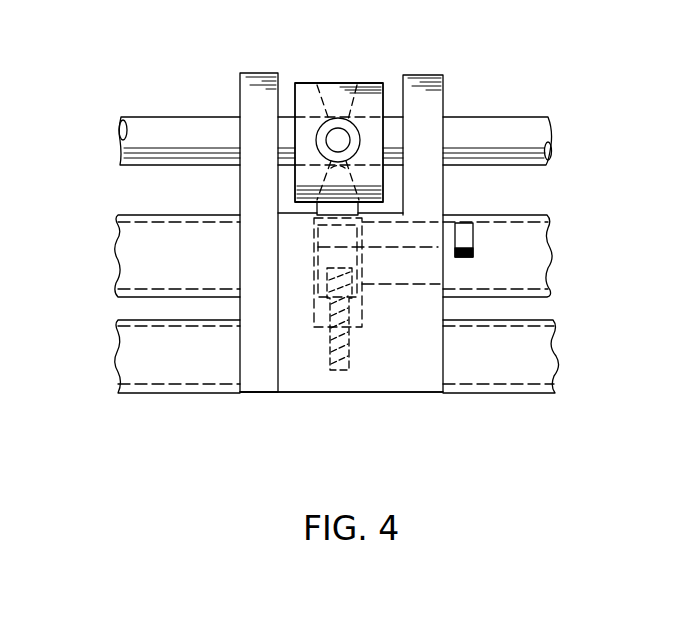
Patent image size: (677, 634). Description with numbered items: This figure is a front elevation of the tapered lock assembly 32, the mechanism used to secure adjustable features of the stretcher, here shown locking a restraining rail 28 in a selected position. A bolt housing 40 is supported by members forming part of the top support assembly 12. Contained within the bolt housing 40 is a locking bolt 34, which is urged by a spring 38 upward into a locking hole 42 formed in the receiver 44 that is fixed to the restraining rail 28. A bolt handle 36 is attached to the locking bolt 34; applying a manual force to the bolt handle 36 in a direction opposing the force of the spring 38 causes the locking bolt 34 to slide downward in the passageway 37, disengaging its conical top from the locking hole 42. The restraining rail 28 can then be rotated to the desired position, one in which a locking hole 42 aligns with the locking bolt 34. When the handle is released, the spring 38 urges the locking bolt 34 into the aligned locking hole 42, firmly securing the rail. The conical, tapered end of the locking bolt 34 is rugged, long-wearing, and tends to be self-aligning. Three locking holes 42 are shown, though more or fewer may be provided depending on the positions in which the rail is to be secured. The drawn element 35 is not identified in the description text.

The top support assembly 12 is at (552, 282).
The restraining rail 28 is at (488, 120).
The tapered lock assembly 32 is at (306, 66).
The locking bolt 34 is at (313, 207).
The bar 35 is at (388, 285).
The bolt handle 36 is at (466, 225).
The passageway 37 is at (314, 273).
The spring 38 is at (351, 352).
The bolt housing 40 is at (254, 385).
The locking hole 42 is at (330, 172).
The receiver 44 is at (352, 83).